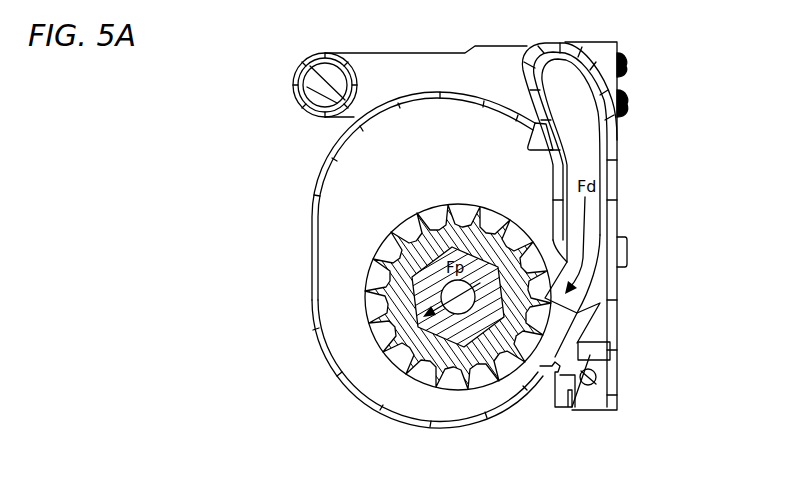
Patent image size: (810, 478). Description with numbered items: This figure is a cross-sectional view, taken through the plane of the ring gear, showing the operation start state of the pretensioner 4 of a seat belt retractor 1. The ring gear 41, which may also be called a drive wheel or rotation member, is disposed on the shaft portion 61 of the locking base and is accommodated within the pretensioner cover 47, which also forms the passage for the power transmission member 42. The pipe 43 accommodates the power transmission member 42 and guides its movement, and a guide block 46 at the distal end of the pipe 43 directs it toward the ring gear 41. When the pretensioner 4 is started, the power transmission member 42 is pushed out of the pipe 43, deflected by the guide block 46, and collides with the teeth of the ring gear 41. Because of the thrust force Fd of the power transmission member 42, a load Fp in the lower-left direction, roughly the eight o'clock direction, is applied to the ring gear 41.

The seat belt retractor 1 is at (692, 85).
The pretensioner 4 is at (403, 222).
The ring gear 41 is at (410, 225).
The power transmission member 42 is at (597, 220).
The pipe 43 is at (395, 63).
The guide block 46 is at (613, 323).
The pretensioner cover 47 is at (308, 242).
The shaft portion 61 is at (392, 307).